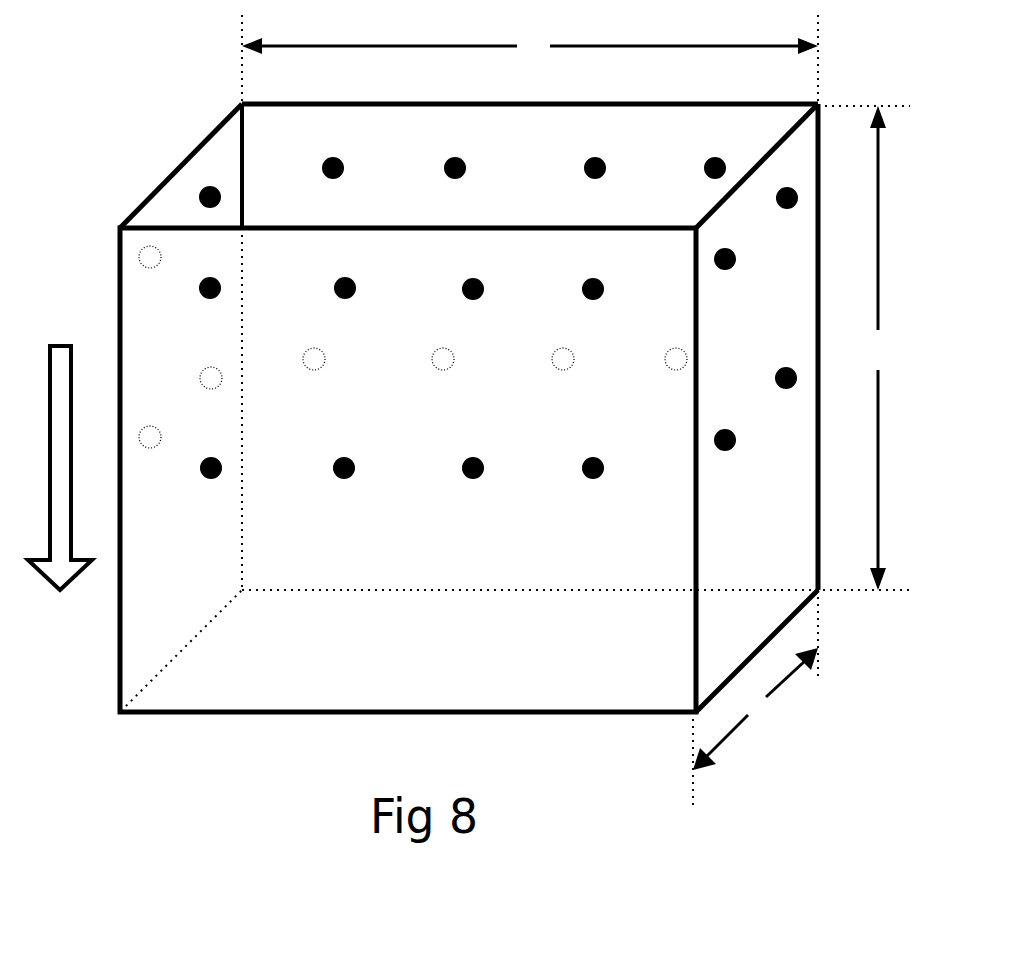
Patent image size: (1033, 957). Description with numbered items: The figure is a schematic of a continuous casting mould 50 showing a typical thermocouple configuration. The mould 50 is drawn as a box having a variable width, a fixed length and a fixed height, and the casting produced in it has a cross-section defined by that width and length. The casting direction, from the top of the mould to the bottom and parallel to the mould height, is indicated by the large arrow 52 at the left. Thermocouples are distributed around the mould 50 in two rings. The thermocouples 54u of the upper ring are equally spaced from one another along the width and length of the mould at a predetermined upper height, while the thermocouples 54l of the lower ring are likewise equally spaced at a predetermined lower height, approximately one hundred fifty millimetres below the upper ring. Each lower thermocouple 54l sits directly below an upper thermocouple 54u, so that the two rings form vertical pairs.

The mould 50 is at (515, 411).
The arrow 52 is at (60, 489).
The upper ring thermocouples 54u is at (476, 219).
The lower ring thermocouples 54l is at (471, 432).